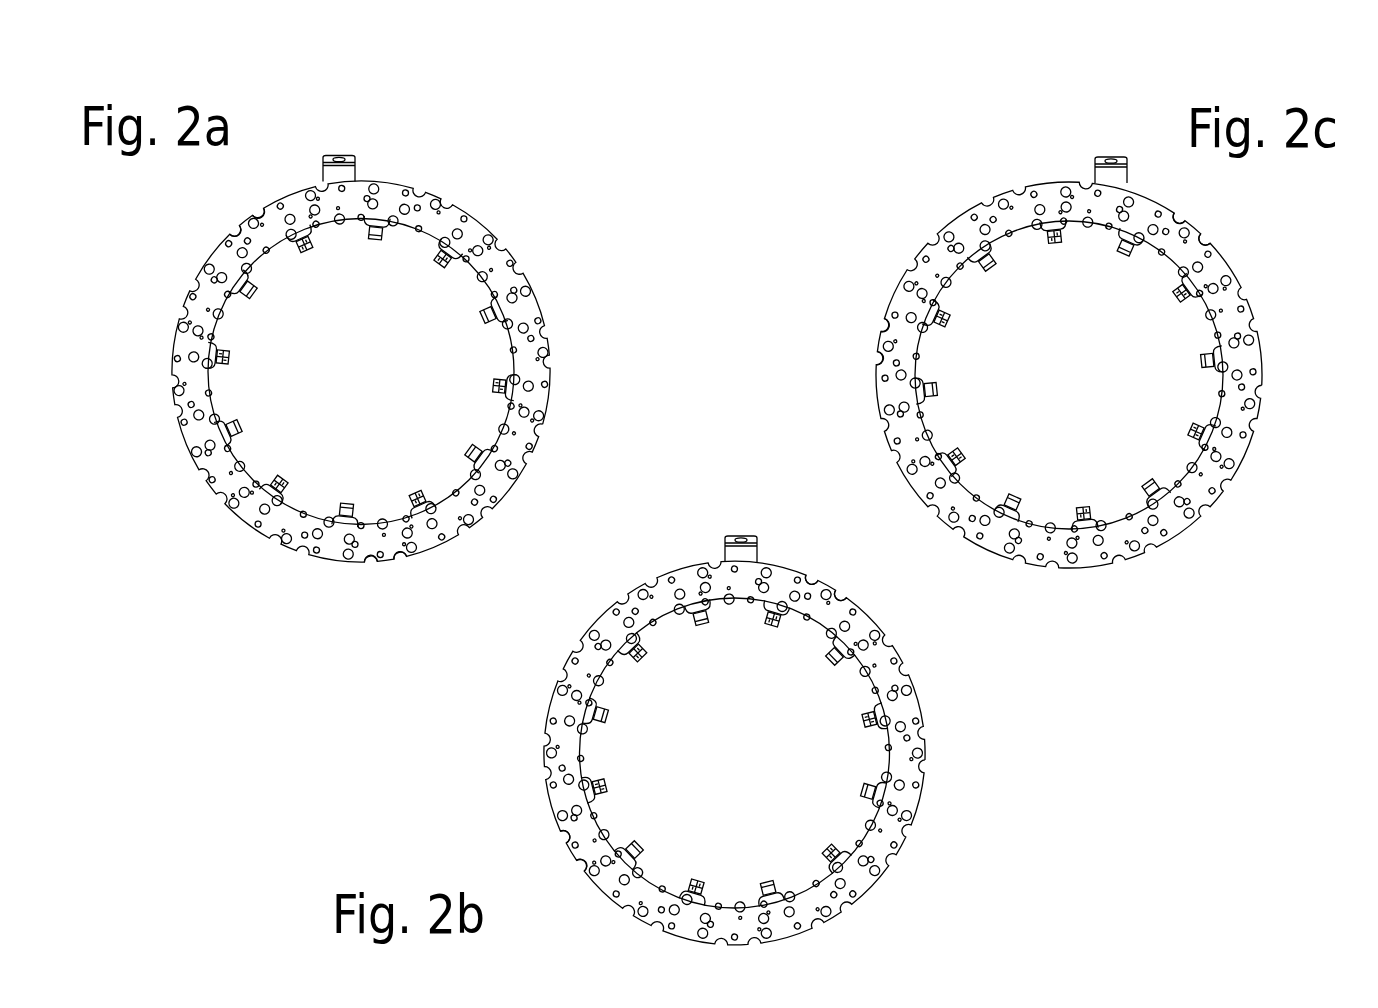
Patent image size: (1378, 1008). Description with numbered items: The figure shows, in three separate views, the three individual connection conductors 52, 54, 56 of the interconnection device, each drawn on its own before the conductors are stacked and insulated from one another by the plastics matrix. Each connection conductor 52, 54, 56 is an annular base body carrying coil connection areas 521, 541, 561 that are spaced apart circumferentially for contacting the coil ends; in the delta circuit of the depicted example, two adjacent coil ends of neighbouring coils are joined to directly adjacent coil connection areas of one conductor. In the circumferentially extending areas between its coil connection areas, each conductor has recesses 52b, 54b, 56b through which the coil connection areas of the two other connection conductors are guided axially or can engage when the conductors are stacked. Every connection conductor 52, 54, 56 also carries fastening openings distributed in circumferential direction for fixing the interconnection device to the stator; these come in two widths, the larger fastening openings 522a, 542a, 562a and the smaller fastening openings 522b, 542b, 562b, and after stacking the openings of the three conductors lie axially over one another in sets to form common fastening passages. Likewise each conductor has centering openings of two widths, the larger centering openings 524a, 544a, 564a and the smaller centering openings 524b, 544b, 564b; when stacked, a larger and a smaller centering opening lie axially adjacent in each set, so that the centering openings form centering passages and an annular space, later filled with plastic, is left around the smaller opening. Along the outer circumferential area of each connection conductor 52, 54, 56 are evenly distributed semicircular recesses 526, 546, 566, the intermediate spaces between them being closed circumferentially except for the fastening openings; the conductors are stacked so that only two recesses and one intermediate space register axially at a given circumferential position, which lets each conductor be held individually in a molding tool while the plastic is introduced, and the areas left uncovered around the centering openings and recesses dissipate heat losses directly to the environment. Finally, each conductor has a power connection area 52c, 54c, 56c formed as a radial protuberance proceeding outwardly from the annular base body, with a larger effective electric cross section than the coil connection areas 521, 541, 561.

In FIG. 2A, the connection conductor 52 is at (458, 158).
In FIG. 2A, the recess 52b is at (248, 269).
In FIG. 2A, the power connection area 52c is at (341, 153).
In FIG. 2A, the coil connection area 521 is at (485, 316).
In FIG. 2A, the larger fastening opening 522a is at (521, 293).
In FIG. 2A, the smaller fastening opening 522b is at (507, 265).
In FIG. 2A, the larger centering opening 524a is at (247, 489).
In FIG. 2A, the smaller centering opening 524b is at (305, 534).
In FIG. 2A, the semicircular recess 526 is at (256, 213).
In FIG. 2B, the connection conductor 54 is at (518, 812).
In FIG. 2B, the recess 54b is at (601, 692).
In FIG. 2B, the power connection area 54c is at (741, 535).
In FIG. 2B, the coil connection area 541 is at (868, 720).
In FIG. 2B, the larger fastening opening 542a is at (640, 597).
In FIG. 2B, the smaller fastening opening 542b is at (672, 578).
In FIG. 2B, the larger centering opening 544a is at (910, 730).
In FIG. 2B, the smaller centering opening 544b is at (916, 760).
In FIG. 2B, the semicircular recess 546 is at (841, 594).
In FIG. 2C, the connection conductor 56 is at (887, 288).
In FIG. 2C, the recess 56b is at (1030, 521).
In FIG. 2C, the power connection area 56c is at (1128, 161).
In FIG. 2C, the coil connection area 561 is at (990, 267).
In FIG. 2C, the larger fastening opening 562a is at (1005, 198).
In FIG. 2C, the smaller fastening opening 562b is at (973, 214).
In FIG. 2C, the larger centering opening 564a is at (1096, 534).
In FIG. 2C, the smaller centering opening 564b is at (1041, 541).
In FIG. 2C, the semicircular recess 566 is at (1205, 239).